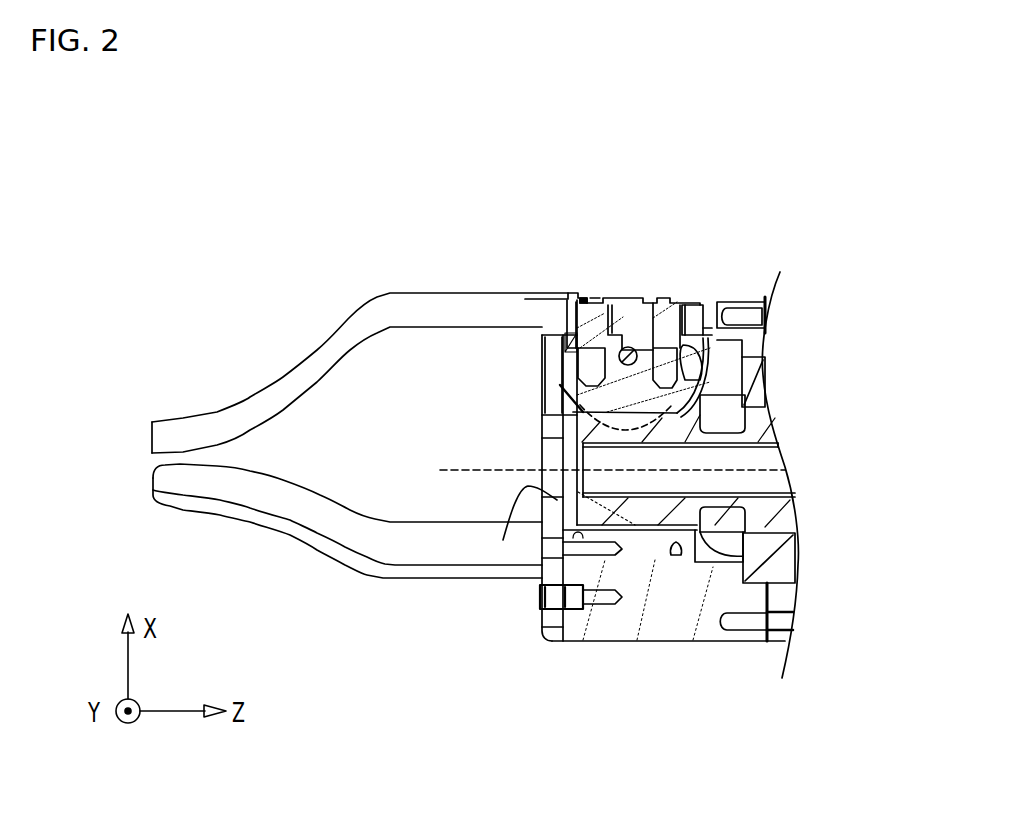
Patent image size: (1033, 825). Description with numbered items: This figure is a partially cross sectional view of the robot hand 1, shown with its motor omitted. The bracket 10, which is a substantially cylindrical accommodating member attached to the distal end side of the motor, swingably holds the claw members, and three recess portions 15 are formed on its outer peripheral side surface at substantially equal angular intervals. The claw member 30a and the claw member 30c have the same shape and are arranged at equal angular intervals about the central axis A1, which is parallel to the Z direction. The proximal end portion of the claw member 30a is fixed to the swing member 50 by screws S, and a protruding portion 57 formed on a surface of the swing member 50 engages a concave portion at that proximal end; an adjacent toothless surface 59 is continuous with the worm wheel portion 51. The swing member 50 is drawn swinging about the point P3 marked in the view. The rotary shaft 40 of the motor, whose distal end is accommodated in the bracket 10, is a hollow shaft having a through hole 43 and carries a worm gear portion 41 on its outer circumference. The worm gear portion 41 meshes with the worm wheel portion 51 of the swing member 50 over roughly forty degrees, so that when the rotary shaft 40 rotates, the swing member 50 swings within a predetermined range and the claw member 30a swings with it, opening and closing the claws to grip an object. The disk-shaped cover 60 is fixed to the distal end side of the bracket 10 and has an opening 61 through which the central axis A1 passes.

The robot hand 1 is at (543, 208).
The bracket 10 is at (703, 640).
The recess portion 15 is at (705, 303).
The claw member 30a is at (453, 303).
The claw member 30c is at (433, 550).
The rotary shaft 40 is at (650, 533).
The worm gear portion 41 is at (577, 417).
The through hole 43 is at (770, 493).
The swing member 50 is at (707, 367).
The worm wheel portion 51 is at (542, 393).
The protruding portion 57 is at (632, 305).
The surface 59 is at (548, 300).
The cover 60 is at (543, 640).
The opening 61 is at (507, 560).
The central axis A1 is at (440, 466).
The pivot point P3 is at (619, 356).
The screw S is at (572, 305).